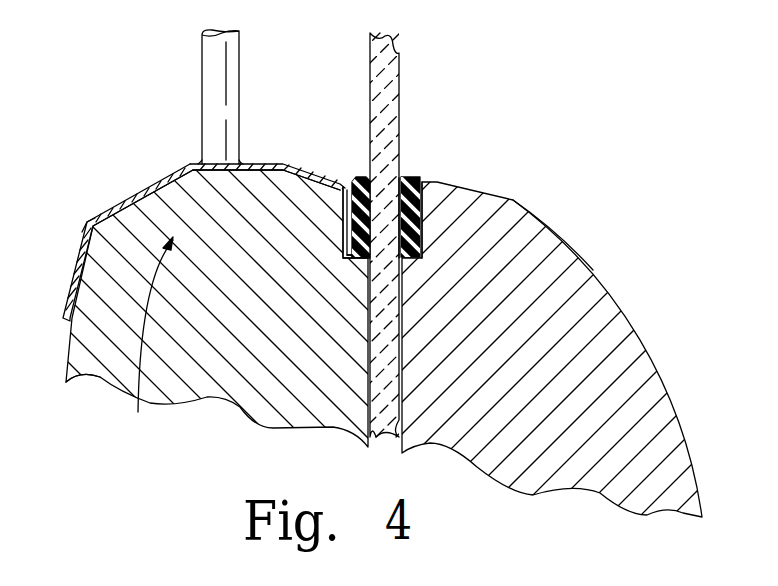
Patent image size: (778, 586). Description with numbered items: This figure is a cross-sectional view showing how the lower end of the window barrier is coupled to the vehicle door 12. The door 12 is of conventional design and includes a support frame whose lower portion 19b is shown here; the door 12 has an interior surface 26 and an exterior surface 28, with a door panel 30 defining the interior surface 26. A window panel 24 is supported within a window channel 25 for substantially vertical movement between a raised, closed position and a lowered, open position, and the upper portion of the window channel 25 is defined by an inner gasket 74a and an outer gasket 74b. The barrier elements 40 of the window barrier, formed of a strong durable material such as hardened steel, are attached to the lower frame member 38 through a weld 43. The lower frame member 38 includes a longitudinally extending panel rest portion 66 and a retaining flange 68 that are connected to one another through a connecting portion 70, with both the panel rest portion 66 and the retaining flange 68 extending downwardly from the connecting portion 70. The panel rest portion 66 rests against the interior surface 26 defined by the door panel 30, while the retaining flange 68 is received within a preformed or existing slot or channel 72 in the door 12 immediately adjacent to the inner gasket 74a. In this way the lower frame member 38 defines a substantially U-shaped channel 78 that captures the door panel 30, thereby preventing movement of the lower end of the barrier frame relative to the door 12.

The door 12 is at (655, 318).
The lower portion of support frame 19b is at (555, 233).
The window panel 24 is at (400, 98).
The window channel 25 is at (411, 178).
The interior surface 26 is at (66, 356).
The exterior surface 28 is at (678, 405).
The door panel 30 is at (86, 376).
The lower frame member 38 is at (84, 232).
The barrier elements 40 is at (208, 100).
The weld 43 is at (203, 164).
The panel rest portion 66 is at (70, 275).
The retaining flange 68 is at (341, 188).
The connecting portion 70 is at (270, 163).
The channel 72 is at (350, 260).
The inner gasket 74a is at (357, 178).
The outer gasket 74b is at (425, 205).
The U-shaped channel 78 is at (150, 335).